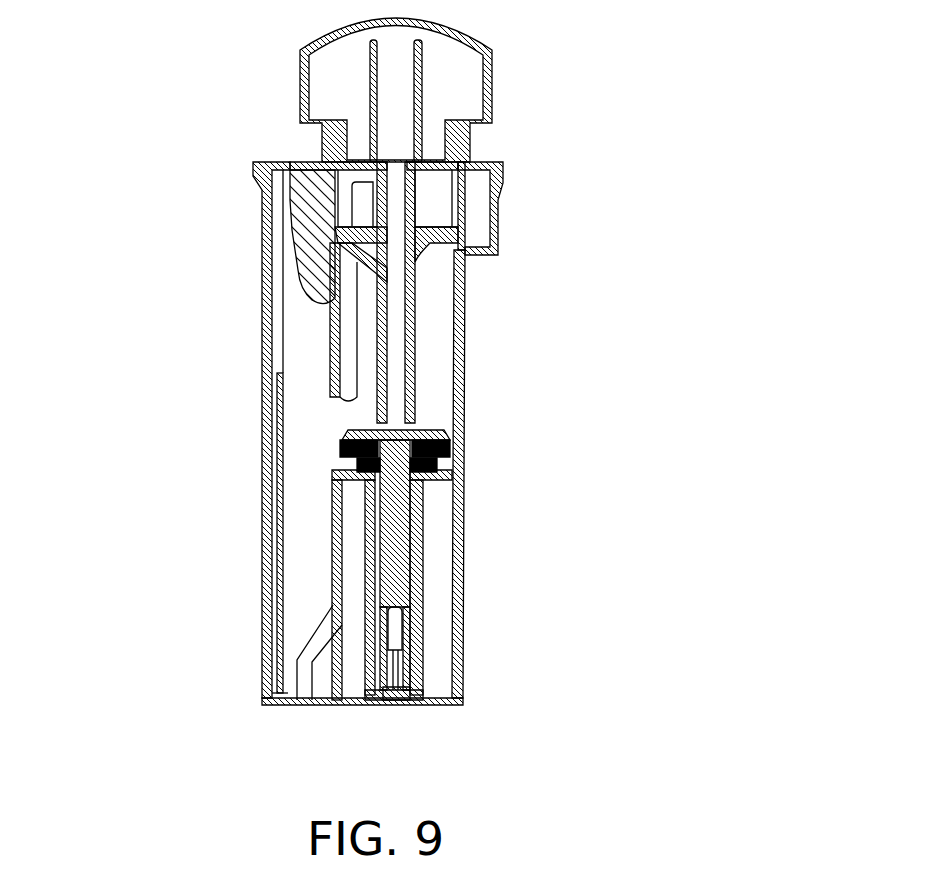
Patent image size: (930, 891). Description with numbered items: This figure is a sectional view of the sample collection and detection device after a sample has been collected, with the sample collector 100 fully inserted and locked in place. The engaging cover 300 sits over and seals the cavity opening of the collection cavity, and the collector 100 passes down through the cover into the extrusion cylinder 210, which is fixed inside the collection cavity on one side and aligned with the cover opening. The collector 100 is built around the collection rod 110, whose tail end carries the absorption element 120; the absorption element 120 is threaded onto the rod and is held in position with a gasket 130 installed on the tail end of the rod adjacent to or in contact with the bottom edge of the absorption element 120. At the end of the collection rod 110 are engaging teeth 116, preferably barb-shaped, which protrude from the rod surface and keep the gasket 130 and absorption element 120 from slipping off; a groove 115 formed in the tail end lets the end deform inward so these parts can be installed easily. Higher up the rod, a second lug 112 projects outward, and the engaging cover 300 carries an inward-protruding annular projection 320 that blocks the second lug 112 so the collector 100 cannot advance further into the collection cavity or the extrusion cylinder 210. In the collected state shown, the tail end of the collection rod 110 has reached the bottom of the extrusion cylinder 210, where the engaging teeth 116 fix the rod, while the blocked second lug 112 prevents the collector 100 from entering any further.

The sample collector 100 is at (492, 95).
The engaging cover 300 is at (258, 162).
The second lug 112 is at (455, 238).
The annular projection 320 is at (482, 255).
The absorption element 120 is at (345, 445).
The gasket 130 is at (345, 465).
The collection rod 110 is at (430, 497).
The extrusion cylinder 210 is at (427, 556).
The groove 115 is at (413, 632).
The engaging teeth 116 is at (418, 678).